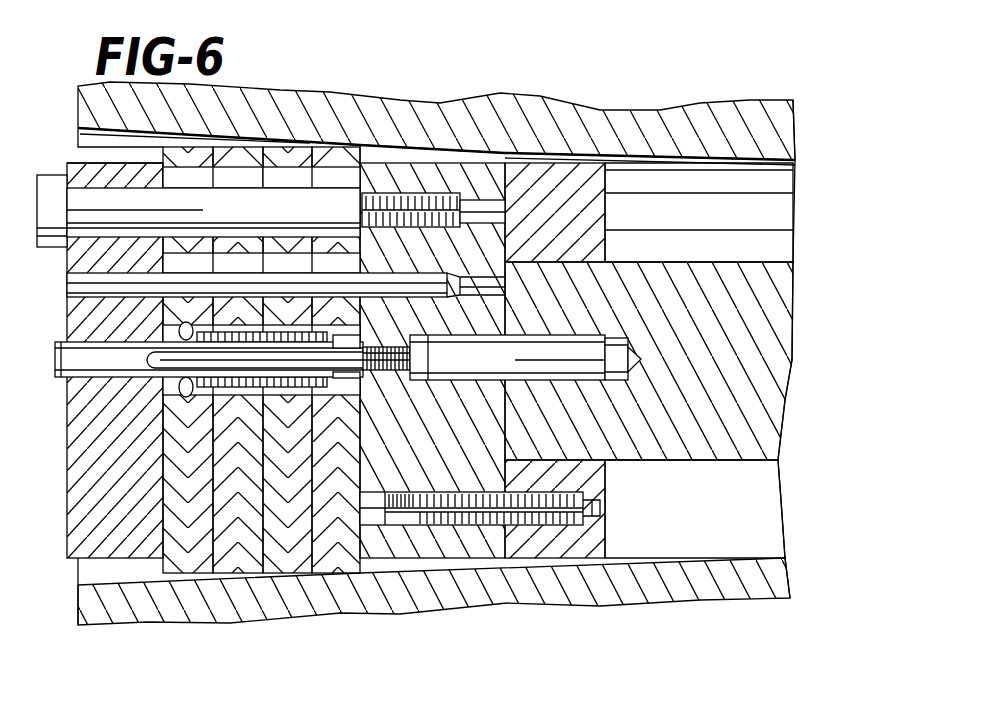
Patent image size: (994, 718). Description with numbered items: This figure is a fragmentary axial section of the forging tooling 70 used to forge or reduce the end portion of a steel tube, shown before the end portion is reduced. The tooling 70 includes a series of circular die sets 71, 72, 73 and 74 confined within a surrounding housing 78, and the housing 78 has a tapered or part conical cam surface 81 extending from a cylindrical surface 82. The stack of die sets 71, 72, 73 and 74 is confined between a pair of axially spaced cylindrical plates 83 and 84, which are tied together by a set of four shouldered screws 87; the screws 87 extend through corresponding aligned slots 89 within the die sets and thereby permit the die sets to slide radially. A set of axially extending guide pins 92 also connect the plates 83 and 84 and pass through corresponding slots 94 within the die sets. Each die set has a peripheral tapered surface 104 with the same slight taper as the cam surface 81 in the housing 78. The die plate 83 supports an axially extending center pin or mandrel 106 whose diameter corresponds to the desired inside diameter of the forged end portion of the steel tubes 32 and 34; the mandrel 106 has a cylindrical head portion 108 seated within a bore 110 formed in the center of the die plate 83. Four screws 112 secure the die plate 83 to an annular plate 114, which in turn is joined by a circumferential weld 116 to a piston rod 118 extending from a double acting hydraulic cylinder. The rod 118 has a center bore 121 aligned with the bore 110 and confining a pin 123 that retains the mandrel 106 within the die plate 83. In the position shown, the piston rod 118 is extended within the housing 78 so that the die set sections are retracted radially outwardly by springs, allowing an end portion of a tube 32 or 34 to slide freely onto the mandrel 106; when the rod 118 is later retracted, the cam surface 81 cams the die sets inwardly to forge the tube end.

The forging tooling 70 is at (533, 86).
The housing 78 is at (360, 108).
The cylindrical surface 82 is at (717, 150).
The shouldered screws 87 is at (90, 195).
The cylindrical plate 84 is at (110, 552).
The slots 89 is at (233, 175).
The peripheral tapered surface 104 is at (292, 152).
The slots 94 is at (323, 262).
The guide pins 92 is at (403, 275).
The circular die set 71 is at (183, 558).
The circular die set 72 is at (230, 558).
The circular die set 73 is at (283, 558).
The circular die set 74 is at (328, 558).
The cam surface 81 is at (150, 623).
The die plate 83 is at (438, 545).
The circumferential weld 116 is at (607, 258).
The piston rod 118 is at (787, 300).
The bore 110 is at (483, 333).
The center bore 121 is at (567, 333).
The pin 123 is at (573, 365).
The cylindrical head portion 108 is at (413, 350).
The mandrel 106 is at (322, 372).
The steel tube 32 is at (103, 377).
The steel tube 34 is at (230, 416).
The screws 112 is at (605, 462).
The annular plate 114 is at (570, 543).